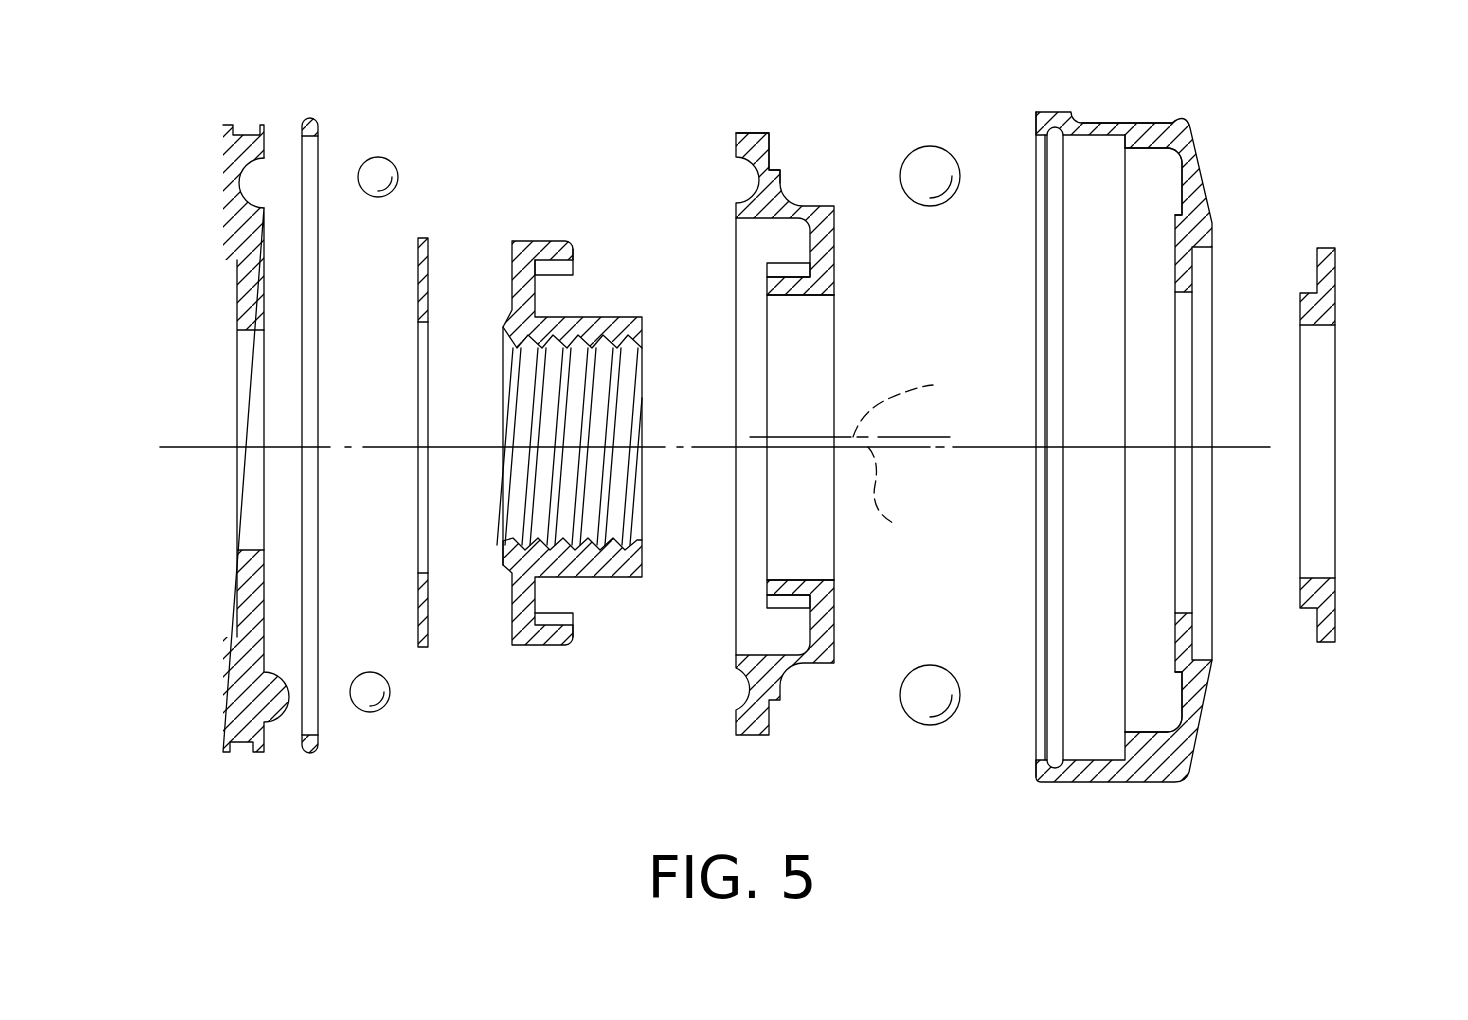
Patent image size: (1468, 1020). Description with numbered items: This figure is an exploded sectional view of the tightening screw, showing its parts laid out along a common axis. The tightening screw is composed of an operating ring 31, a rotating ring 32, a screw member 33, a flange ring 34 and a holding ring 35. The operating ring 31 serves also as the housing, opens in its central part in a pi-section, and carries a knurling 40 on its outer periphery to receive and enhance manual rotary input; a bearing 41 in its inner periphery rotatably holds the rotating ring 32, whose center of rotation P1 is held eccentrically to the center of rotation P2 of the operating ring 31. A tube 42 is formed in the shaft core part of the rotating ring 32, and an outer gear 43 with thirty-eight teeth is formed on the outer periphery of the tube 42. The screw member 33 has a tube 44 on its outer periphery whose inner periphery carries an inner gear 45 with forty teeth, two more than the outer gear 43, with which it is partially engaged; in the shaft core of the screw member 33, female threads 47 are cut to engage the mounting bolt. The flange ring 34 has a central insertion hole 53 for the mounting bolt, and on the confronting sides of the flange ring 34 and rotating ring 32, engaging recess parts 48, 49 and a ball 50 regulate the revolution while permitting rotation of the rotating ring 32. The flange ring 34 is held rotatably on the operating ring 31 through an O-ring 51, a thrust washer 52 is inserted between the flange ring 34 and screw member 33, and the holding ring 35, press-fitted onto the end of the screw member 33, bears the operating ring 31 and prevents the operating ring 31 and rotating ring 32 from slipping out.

The operating ring 31 is at (1204, 170).
The rotating ring 32 is at (786, 182).
The screw member 33 is at (600, 578).
The flange ring 34 is at (222, 208).
The holding ring 35 is at (1337, 307).
The knurling 40 is at (1130, 111).
The bearing 41 is at (936, 150).
The tube 42 is at (797, 300).
The outer gear 43 is at (786, 260).
The tube 44 is at (534, 240).
The inner gear 45 is at (563, 268).
The female threads 47 is at (642, 490).
The engaging recess part 48 is at (738, 158).
The engaging recess part 49 is at (244, 176).
The ball 50 is at (392, 163).
The O-ring 51 is at (318, 756).
The thrust washer 52 is at (428, 649).
The insertion hole 53 is at (246, 535).
The center of rotation of the rotating ring P1 is at (863, 398).
The center of rotation of the operating ring P2 is at (905, 497).